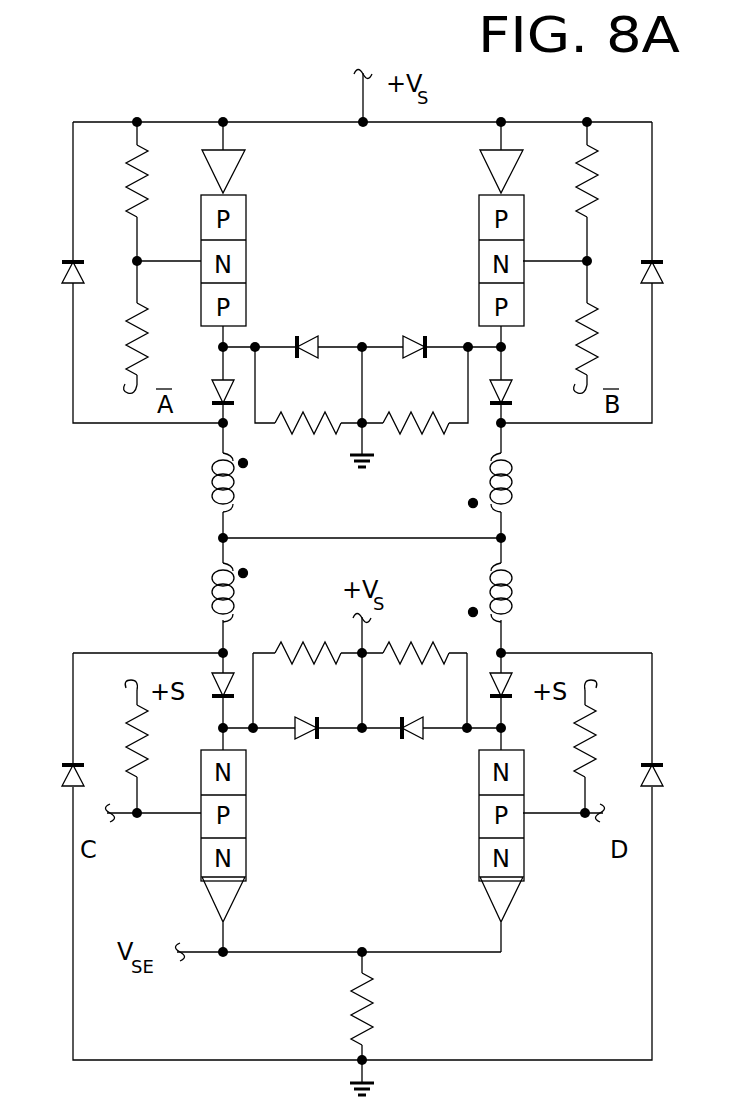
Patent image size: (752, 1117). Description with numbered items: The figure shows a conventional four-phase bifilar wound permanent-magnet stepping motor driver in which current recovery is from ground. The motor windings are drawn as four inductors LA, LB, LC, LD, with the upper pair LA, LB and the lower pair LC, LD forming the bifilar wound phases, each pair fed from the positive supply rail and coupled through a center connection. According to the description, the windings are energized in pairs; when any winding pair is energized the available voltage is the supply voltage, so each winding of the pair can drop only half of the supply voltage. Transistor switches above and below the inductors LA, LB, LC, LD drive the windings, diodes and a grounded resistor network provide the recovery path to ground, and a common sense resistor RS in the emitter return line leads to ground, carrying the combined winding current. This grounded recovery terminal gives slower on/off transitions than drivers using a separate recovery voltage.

The inductor L_A LA is at (201, 482).
The inductor L_B LB is at (519, 482).
The inductor L_C LC is at (201, 592).
The inductor L_D LD is at (520, 592).
The resistor R_S RS is at (382, 1017).